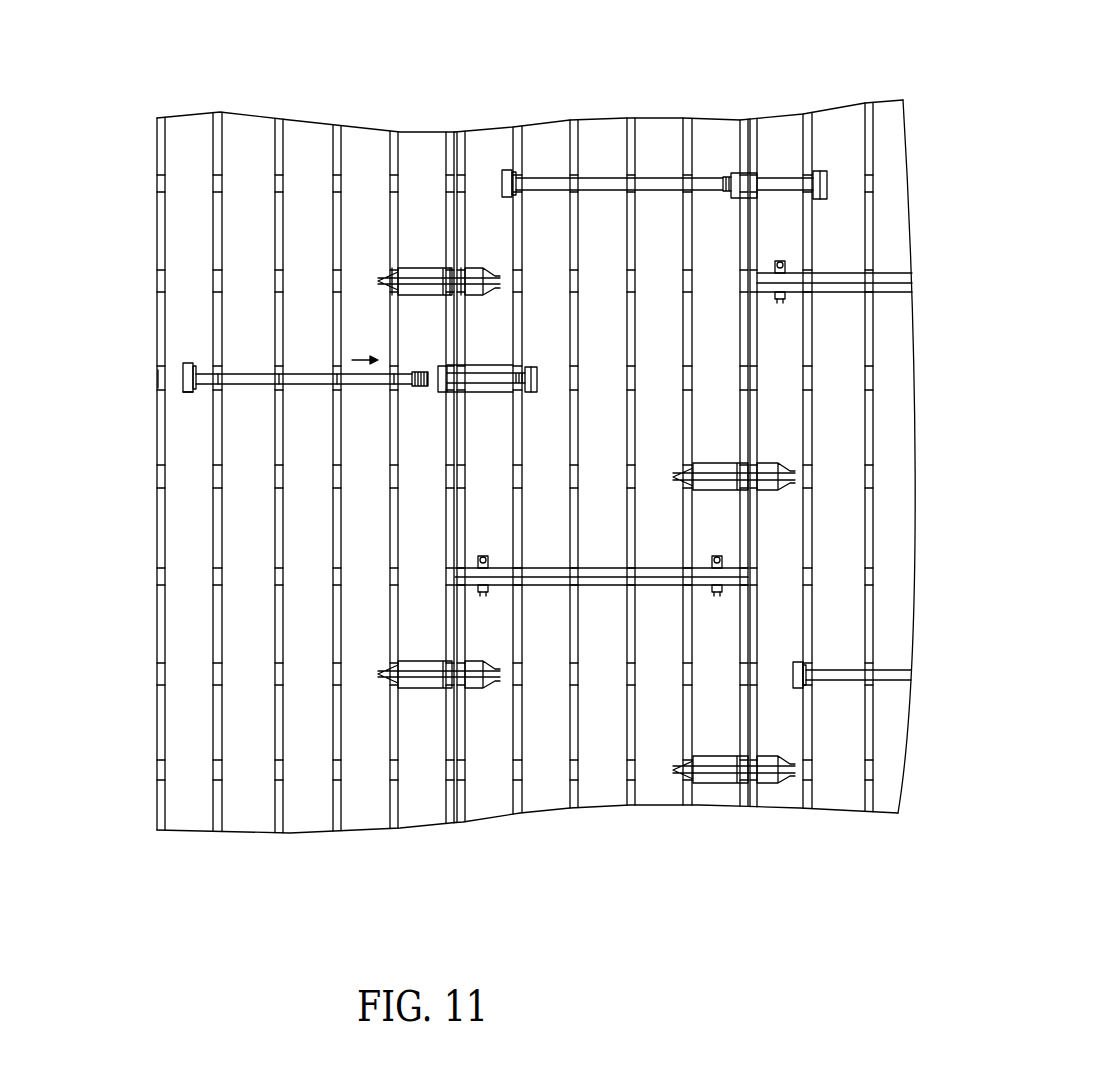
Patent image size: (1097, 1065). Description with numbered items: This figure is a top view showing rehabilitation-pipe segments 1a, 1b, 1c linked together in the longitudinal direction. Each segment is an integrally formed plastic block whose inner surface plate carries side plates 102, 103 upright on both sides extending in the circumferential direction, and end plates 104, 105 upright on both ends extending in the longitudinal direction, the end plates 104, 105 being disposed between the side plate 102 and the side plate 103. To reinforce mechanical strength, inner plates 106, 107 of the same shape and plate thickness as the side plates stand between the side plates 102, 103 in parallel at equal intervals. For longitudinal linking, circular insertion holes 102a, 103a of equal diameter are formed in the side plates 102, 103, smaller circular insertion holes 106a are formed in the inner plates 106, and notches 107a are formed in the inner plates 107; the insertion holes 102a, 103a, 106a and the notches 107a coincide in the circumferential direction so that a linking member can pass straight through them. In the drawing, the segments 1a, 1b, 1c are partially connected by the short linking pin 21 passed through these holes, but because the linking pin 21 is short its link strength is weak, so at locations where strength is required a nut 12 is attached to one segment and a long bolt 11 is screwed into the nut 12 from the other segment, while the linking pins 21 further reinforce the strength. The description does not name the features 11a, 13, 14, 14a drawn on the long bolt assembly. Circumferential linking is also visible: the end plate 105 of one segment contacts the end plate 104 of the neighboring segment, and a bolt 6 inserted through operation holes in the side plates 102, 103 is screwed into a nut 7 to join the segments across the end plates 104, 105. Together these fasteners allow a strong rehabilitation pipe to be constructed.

The segment 1a is at (316, 67).
The segment 1b is at (613, 82).
The segment 1c is at (848, 57).
The side plate 102 is at (160, 118).
The side plate 103 is at (450, 132).
The inner plate 106 is at (217, 112).
The inner plate 107 is at (278, 118).
The insertion hole 102a is at (156, 378).
The insertion hole 103a is at (452, 268).
The insertion hole 106a is at (392, 268).
The notch 107a is at (283, 386).
The end plate 104 is at (598, 585).
The end plate 105 is at (600, 568).
The long bolt 11 is at (605, 195).
The threaded portion of bolt 11a is at (429, 363).
The nut 12 is at (487, 365).
The nut 13 is at (822, 171).
The bolt head 14 is at (505, 176).
The bolt head flange 14a is at (188, 393).
The linking pin 21 is at (426, 296).
The nut 7 is at (481, 555).
The bolt 6 is at (483, 596).